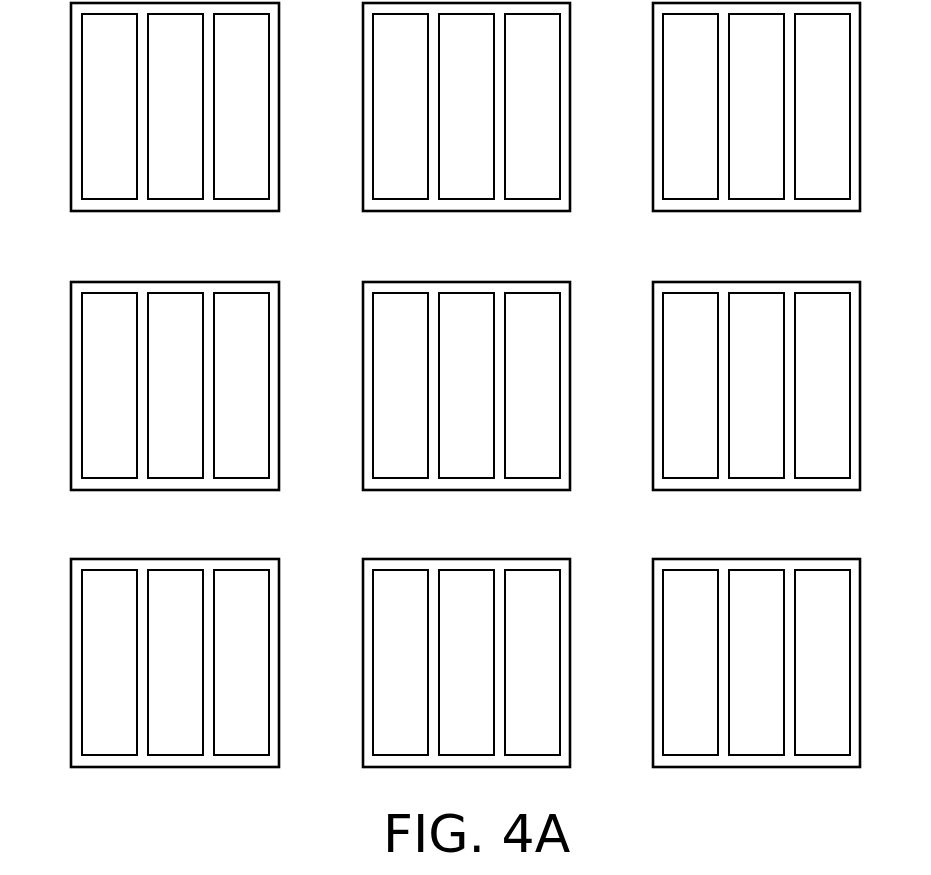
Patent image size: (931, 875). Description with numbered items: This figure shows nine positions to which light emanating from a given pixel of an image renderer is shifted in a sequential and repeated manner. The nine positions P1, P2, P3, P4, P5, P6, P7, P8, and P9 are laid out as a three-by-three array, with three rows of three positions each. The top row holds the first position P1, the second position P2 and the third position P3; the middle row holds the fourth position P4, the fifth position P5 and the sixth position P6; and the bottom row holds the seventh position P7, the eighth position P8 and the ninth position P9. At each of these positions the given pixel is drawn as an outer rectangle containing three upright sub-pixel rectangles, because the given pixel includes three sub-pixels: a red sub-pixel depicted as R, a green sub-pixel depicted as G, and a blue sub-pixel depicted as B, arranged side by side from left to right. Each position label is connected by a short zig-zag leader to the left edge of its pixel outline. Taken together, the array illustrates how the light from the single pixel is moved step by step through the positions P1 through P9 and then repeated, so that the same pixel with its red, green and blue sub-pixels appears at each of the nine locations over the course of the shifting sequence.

The position P1 is at (144, 107).
The position P2 is at (435, 107).
The position P3 is at (725, 107).
The position P4 is at (144, 386).
The position P5 is at (435, 386).
The position P6 is at (725, 386).
The position P7 is at (144, 663).
The position P8 is at (435, 663).
The position P9 is at (725, 663).